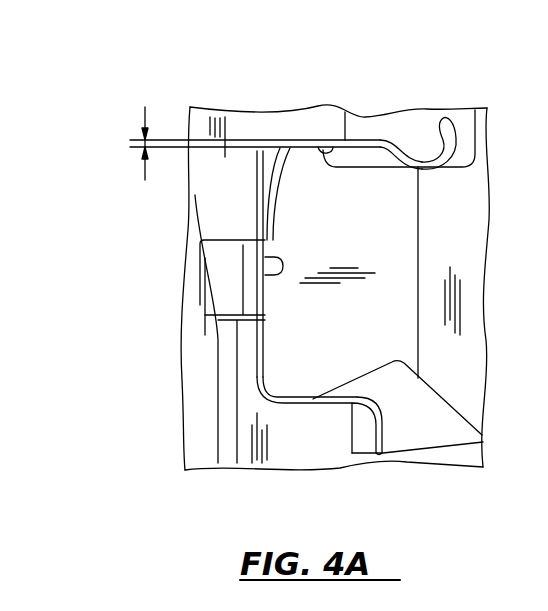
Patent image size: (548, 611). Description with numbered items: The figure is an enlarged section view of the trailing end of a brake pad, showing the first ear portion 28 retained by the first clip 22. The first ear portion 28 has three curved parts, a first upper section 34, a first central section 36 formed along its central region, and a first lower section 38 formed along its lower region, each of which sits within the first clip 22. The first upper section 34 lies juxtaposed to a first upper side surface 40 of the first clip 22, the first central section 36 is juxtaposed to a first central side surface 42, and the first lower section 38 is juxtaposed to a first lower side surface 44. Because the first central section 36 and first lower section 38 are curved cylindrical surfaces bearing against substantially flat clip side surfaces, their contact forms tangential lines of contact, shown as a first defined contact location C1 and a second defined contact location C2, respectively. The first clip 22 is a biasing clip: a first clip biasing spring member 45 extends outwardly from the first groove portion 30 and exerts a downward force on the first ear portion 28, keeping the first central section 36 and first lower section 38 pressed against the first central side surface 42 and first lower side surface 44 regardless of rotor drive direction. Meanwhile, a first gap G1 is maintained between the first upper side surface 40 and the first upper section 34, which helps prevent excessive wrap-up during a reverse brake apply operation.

The first clip 22 is at (385, 438).
The first ear portion 28 is at (342, 190).
The first groove portion 30 is at (275, 143).
The first upper section 34 is at (307, 163).
The first central section 36 is at (252, 298).
The first lower section 38 is at (310, 398).
The first upper side surface 40 is at (335, 148).
The first central side surface 42 is at (270, 258).
The first lower side surface 44 is at (347, 397).
The first clip biasing spring member 45 is at (437, 153).
The first gap G1 is at (127, 141).
The first defined contact location C1 is at (270, 284).
The second defined contact location C2 is at (315, 390).